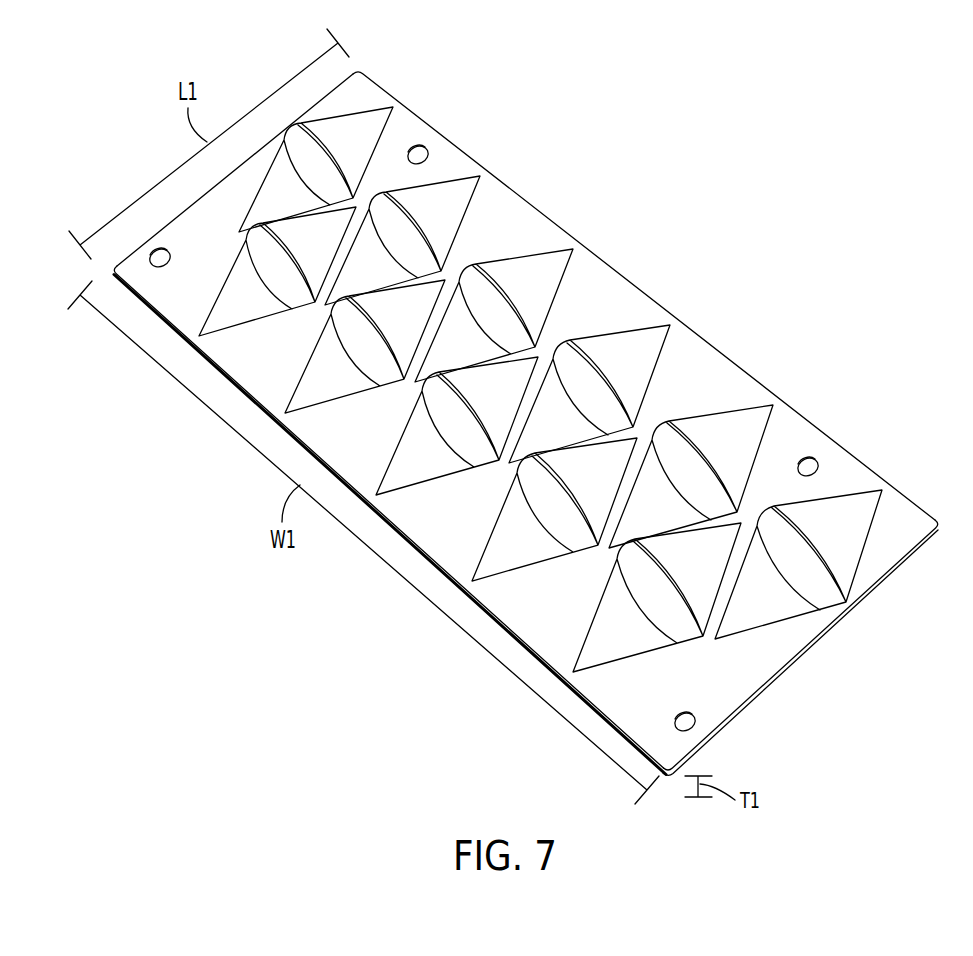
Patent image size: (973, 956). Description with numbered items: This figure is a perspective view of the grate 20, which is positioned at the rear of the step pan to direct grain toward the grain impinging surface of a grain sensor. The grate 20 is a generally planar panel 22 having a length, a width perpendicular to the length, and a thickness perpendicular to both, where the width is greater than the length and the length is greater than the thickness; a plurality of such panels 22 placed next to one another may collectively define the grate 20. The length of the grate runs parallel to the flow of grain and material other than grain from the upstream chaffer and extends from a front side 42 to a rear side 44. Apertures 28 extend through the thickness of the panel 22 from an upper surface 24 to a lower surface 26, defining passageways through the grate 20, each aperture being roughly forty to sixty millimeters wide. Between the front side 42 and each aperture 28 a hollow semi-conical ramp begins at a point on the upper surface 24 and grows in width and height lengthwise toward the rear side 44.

The grate 20 is at (526, 402).
The panel 22 is at (526, 424).
The upper surface 24 is at (525, 421).
The lower surface 26 is at (873, 594).
The apertures 28 is at (322, 173).
The front side 42 is at (483, 163).
The rear side 44 is at (472, 602).